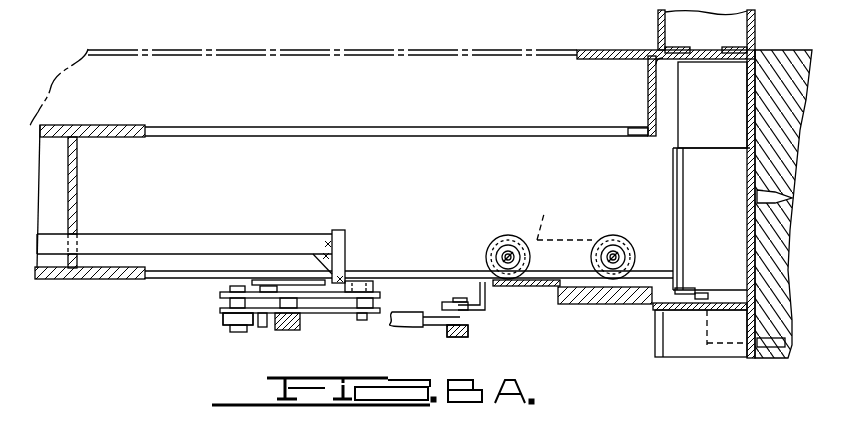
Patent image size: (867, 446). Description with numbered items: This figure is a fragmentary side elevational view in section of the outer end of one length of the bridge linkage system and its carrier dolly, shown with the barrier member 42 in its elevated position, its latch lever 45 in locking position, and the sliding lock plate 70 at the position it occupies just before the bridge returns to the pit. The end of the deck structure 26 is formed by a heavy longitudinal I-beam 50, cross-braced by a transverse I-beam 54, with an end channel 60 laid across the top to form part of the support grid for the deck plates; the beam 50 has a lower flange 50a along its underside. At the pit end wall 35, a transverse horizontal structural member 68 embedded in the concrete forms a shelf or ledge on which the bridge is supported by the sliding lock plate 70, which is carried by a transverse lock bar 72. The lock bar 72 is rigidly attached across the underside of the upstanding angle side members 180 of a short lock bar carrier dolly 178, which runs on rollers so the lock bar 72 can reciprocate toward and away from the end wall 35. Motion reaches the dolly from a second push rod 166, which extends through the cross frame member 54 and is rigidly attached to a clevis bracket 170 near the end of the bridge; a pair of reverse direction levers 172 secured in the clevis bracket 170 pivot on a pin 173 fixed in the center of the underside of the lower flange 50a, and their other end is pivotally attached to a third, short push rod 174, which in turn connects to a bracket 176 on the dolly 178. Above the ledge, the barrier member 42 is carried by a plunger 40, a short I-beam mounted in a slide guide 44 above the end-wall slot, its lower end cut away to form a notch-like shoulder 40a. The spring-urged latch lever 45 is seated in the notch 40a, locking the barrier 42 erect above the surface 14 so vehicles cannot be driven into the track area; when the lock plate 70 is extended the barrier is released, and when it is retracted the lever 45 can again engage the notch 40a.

The deck structure 26 is at (297, 51).
The longitudinal I-beam 50 is at (333, 168).
The transverse I-beam 54 is at (73, 178).
The lower flange 50a is at (168, 279).
The second push rod 166 is at (172, 237).
The clevis bracket 170 is at (347, 251).
The reverse direction levers 172 is at (324, 319).
The pin 173 is at (304, 333).
The third push rod 174 is at (263, 328).
The bracket 176 is at (487, 312).
The lock bar 72 is at (553, 310).
The sliding lock plate 70 is at (590, 313).
The lock bar carrier dolly 178 is at (603, 234).
The upstanding angle side members 180 is at (555, 214).
The barrier member 42 is at (657, 23).
The end channel 60 is at (647, 97).
The plunger 40 is at (676, 146).
The slide guide 44 is at (672, 173).
The latch lever 45 is at (693, 293).
The notch-like shoulder 40a is at (687, 346).
The transverse horizontal structural metal member 68 is at (727, 306).
The end wall 35 is at (742, 345).
The surface 14 is at (783, 53).